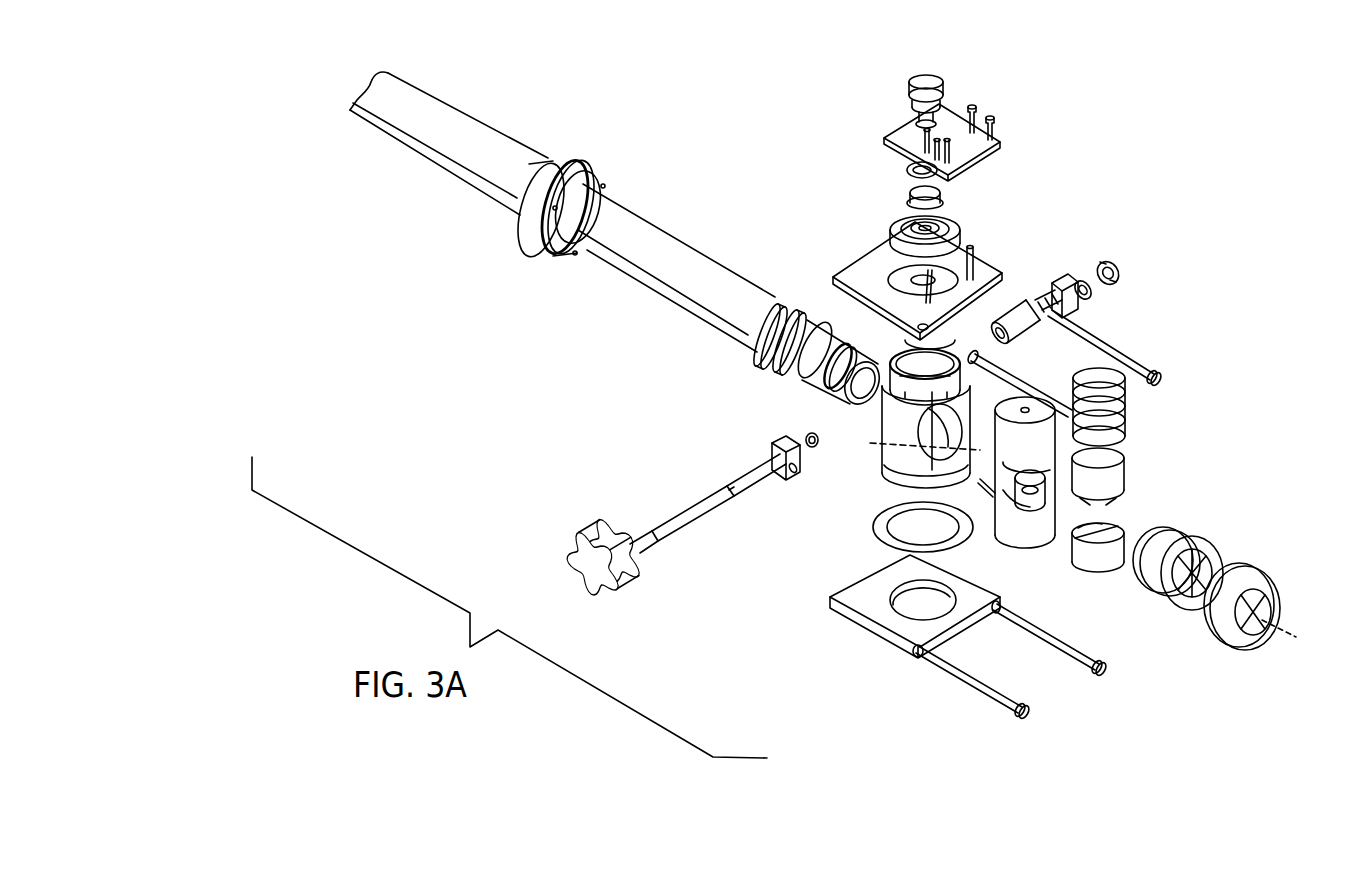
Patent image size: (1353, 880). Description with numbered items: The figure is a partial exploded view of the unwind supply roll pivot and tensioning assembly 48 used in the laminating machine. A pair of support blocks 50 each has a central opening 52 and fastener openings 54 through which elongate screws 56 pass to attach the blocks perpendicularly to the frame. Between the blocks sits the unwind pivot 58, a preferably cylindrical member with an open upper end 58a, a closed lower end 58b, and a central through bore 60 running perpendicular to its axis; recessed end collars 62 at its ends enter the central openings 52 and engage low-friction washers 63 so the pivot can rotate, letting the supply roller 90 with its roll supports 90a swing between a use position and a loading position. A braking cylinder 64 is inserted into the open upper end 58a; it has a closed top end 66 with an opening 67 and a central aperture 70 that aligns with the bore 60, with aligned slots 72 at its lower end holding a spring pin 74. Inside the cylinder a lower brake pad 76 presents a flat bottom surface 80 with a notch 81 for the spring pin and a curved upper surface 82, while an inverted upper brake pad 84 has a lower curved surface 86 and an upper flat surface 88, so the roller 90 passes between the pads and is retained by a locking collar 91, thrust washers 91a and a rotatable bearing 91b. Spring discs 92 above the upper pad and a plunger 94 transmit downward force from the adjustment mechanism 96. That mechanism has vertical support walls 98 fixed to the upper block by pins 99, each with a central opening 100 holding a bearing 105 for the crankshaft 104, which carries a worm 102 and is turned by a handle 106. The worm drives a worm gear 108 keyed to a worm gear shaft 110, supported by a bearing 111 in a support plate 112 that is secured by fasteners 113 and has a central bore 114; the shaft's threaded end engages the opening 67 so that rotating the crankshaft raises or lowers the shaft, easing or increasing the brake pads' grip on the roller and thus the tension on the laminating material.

The unwind supply roll pivot and tensioning assembly 48 is at (1081, 98).
The support block 50 is at (833, 604).
The central opening 52 is at (907, 592).
The fastener opening 54 is at (915, 654).
The elongate screw 56 is at (1090, 676).
The unwind pivot 58 is at (872, 427).
The open upper end 58a is at (886, 349).
The closed lower end 58b is at (879, 488).
The central through bore 60 is at (930, 438).
The recessed end collar 62 is at (778, 360).
The low-friction washer 63 is at (930, 272).
The braking cylinder 64 is at (1013, 527).
The closed top end 66 is at (1040, 414).
The opening 67 is at (1026, 408).
The central aperture 70 is at (1000, 500).
The aligned slot 72 is at (1045, 523).
The spring pin 74 is at (967, 510).
The lower brake pad 76 is at (1131, 528).
The flat bottom surface 80 is at (1088, 568).
The notch 81 is at (1103, 565).
The curved upper surface 82 is at (1098, 537).
The upper brake pad 84 is at (1131, 466).
The lower curved surface 86 is at (1112, 492).
The upper flat surface 88 is at (1112, 460).
The supply roller 90 is at (467, 130).
The roll support 90a is at (580, 162).
The locking collar 91 is at (1273, 590).
The thrust washer 91a is at (1217, 557).
The rotatable bearing 91b is at (1148, 590).
The spring disc 92 is at (1120, 440).
The plunger 94 is at (1112, 378).
The adjustment mechanism 96 is at (780, 122).
The vertical support wall 98 is at (1053, 295).
The pin 99 is at (926, 325).
The central opening 100 is at (1083, 280).
The worm 102 is at (1002, 318).
The crankshaft 104 is at (698, 500).
The bearing 105 is at (1116, 270).
The handle 106 is at (585, 560).
The worm gear 108 is at (907, 225).
The worm gear shaft 110 is at (911, 90).
The bearing 111 is at (912, 188).
The support plate 112 is at (953, 117).
The fastener 113 is at (990, 115).
The central bore 114 is at (884, 138).